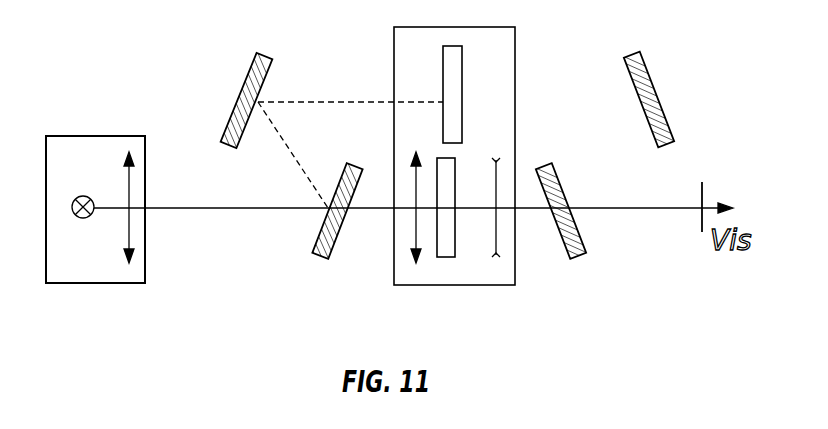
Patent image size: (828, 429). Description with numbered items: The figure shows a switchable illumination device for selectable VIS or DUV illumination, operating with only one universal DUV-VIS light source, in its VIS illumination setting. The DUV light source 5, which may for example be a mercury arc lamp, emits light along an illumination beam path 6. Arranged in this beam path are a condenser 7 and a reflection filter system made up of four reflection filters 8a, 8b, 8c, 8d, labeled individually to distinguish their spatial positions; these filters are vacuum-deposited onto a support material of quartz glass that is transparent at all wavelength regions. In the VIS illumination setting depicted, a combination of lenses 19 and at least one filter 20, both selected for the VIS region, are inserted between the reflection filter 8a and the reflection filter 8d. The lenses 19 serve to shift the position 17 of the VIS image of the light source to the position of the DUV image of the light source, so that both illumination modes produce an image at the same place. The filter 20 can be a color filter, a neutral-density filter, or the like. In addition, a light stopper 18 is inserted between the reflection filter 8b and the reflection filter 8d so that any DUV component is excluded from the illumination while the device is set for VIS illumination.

The DUV light source 5 is at (83, 196).
The illumination beam path 6 is at (615, 208).
The condenser 7 is at (128, 233).
The reflection filter 8a is at (318, 256).
The reflection filter 8b is at (264, 53).
The reflection filter 8c is at (628, 53).
The reflection filter 8d is at (580, 260).
The position of the VIS image of the light source 17 is at (702, 180).
The light stopper 18 is at (462, 76).
The lenses 19 is at (414, 226).
The filter 20 is at (455, 158).